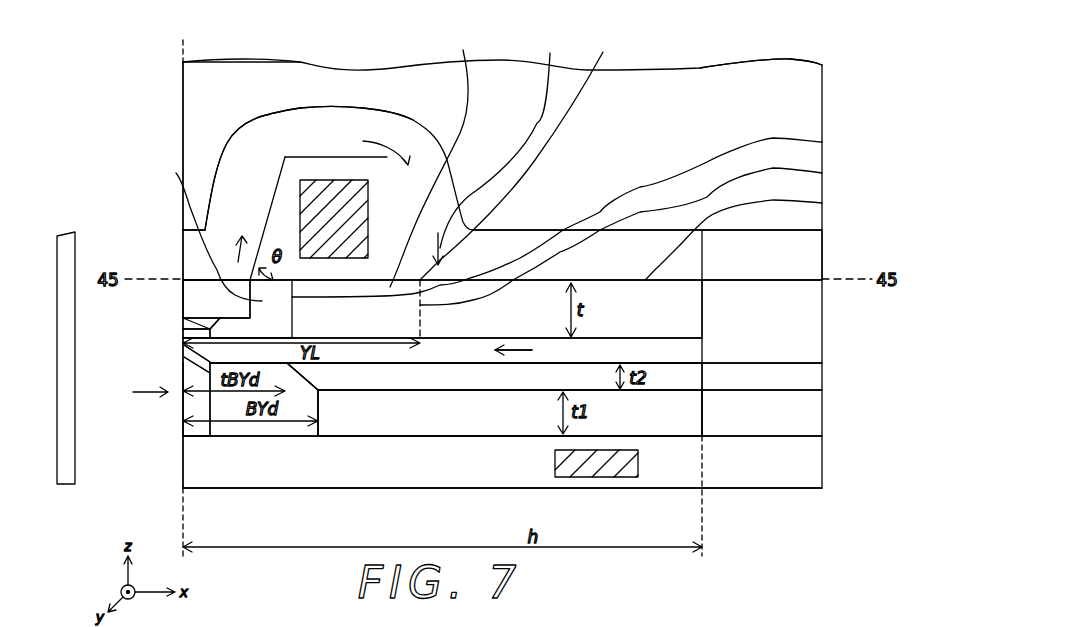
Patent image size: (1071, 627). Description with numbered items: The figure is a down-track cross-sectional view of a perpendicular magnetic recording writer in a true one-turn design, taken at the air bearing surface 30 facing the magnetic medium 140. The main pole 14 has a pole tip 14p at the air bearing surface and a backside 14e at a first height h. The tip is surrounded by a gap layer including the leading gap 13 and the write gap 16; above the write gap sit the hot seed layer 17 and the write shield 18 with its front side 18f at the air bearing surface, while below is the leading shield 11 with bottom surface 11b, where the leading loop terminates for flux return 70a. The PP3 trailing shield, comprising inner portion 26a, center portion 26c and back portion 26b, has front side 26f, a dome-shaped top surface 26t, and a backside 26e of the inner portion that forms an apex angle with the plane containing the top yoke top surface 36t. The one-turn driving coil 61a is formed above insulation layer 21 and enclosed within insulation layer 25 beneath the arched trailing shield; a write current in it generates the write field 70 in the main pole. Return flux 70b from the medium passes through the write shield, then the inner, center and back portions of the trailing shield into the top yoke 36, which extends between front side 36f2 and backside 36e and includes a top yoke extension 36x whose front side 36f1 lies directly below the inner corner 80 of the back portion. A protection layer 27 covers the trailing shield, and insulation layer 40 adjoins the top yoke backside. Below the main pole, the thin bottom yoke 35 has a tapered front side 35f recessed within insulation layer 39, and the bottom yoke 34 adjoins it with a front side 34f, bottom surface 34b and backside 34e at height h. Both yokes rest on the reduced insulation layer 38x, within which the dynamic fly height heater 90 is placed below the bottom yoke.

The air bearing surface 30 is at (183, 305).
The insulation layer 25 is at (250, 123).
The driving coil 61a is at (312, 180).
The PP3 center portion 26c is at (335, 140).
The PP3 TS top surface 26t is at (373, 115).
The PP3 back portion 26b is at (847, 256).
The TY extension 36x is at (504, 138).
The inner corner 80 is at (516, 154).
The protection layer 27 is at (812, 100).
The front side of TY 36f2 is at (588, 215).
The front side of TY extension 36f1 is at (652, 234).
The TY top surface 36t is at (759, 237).
The top yoke 36 is at (683, 297).
The TY backside 36e is at (703, 313).
The MP backside 14e is at (703, 350).
The insulation layer 40 is at (807, 355).
The thin bottom yoke (tBY) 35 is at (693, 378).
The insulation layer 39 is at (805, 422).
The insulation layer 38x is at (805, 470).
The backside of PP3 inner portion 26e is at (243, 180).
The PP3 inner portion 26a is at (290, 177).
The insulation layer 21 is at (176, 173).
The front side of PP3 TS 26f is at (183, 242).
The write shield 18 is at (205, 287).
The front side of write shield 18f is at (187, 305).
The hot seed layer 17 is at (185, 320).
The write gap 16 is at (185, 328).
The MP tip 14p is at (183, 340).
The leading gap 13 is at (183, 357).
The magnetic flux return (leading loop) 70a is at (146, 379).
The leading shield 11 is at (183, 417).
The LS bottom surface 11b is at (197, 440).
The magnetic medium 140 is at (68, 486).
The BY front side 34f is at (320, 412).
The tBY front side 35f is at (300, 373).
The BY bottom surface 34b is at (430, 437).
The bottom yoke 34 is at (493, 410).
The DFH heater 90 is at (582, 467).
The main pole 14 is at (680, 353).
The BY backside 34e is at (703, 417).
The magnetic flux (return field) 70b is at (352, 195).
The write field 70 is at (527, 351).